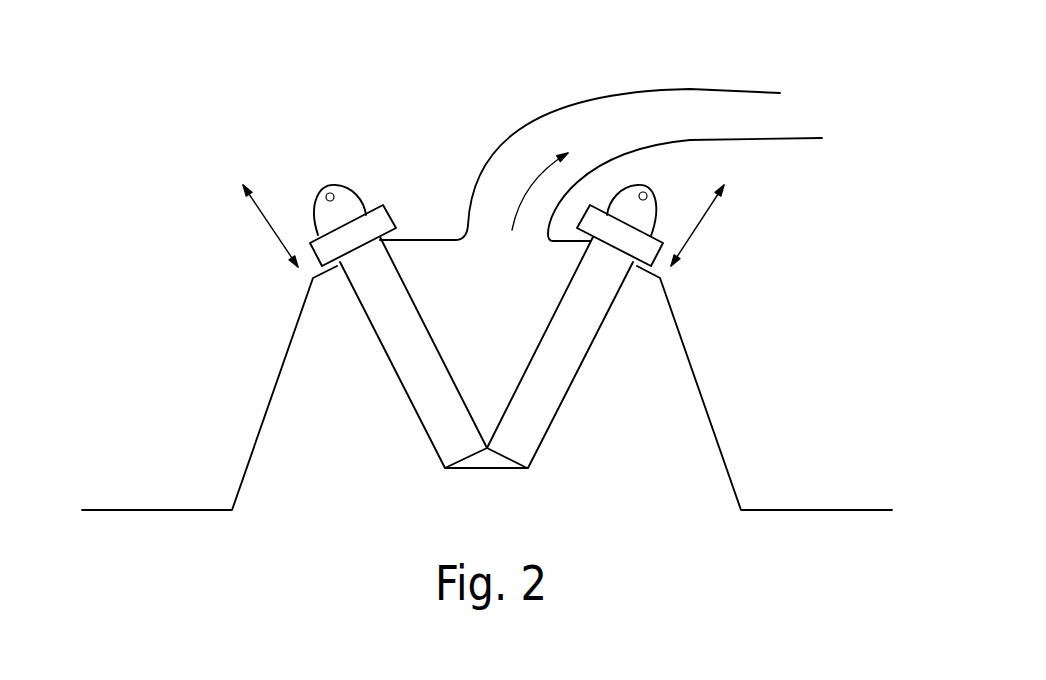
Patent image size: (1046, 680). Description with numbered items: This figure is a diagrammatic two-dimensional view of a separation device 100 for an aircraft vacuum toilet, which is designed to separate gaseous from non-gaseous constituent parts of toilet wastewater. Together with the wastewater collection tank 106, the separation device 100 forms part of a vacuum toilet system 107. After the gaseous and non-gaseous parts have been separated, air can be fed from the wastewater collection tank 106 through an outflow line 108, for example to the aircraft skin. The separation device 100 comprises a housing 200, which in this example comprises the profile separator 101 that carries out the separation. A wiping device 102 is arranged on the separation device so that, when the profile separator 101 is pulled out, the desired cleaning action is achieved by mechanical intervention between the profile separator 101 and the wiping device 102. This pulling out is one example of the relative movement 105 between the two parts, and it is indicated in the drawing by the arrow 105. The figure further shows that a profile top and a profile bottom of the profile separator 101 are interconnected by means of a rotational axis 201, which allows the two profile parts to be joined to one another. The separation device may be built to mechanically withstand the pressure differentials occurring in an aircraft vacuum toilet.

The separation device 100 is at (433, 205).
The profile separator 101 is at (408, 378).
The wiping device 102 is at (312, 241).
The relative movement 105 is at (266, 224).
The wastewater collection tank 106 is at (728, 472).
The vacuum toilet system 107 is at (575, 90).
The outflow line 108 is at (668, 88).
The housing 200 is at (386, 287).
The rotational axis 201 is at (331, 192).